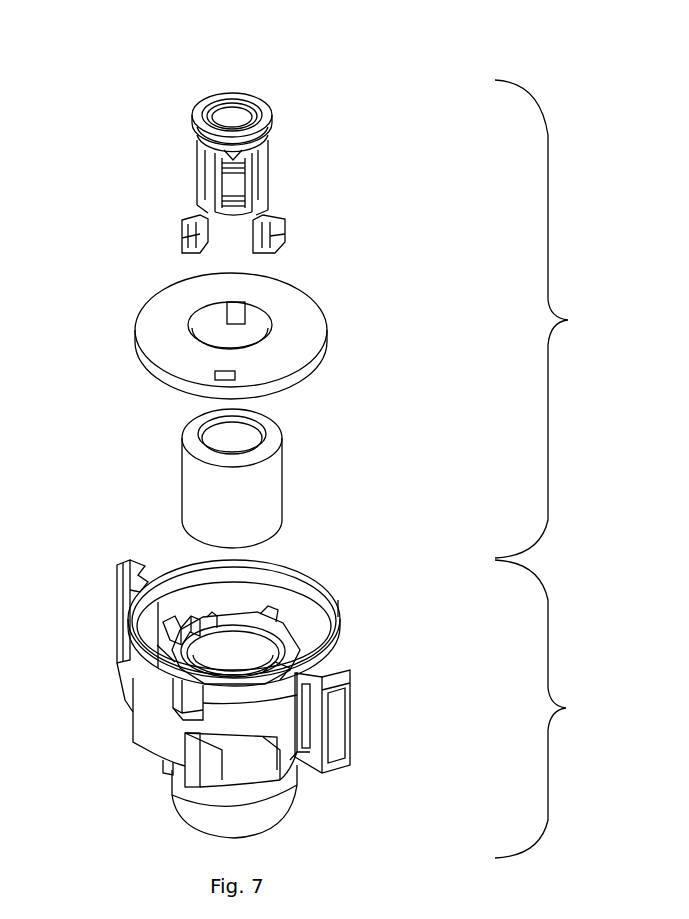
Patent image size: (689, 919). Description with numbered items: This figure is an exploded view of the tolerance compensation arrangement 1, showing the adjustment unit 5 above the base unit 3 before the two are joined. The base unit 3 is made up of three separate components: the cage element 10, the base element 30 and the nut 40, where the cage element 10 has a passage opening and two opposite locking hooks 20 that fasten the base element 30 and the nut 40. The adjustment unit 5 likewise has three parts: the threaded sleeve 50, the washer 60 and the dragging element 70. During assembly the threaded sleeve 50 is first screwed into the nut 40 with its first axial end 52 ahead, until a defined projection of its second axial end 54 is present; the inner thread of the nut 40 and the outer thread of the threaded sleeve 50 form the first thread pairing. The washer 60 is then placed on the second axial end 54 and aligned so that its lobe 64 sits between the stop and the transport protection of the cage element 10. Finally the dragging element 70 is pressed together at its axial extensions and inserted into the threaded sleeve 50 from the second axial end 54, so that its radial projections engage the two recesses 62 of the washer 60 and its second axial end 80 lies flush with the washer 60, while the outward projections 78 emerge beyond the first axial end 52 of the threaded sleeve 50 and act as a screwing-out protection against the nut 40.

The tolerance compensation arrangement 1 is at (536, 32).
The base unit 3 is at (542, 709).
The adjustment unit 5 is at (542, 319).
The cage element 10 is at (230, 699).
The locking hooks 20 is at (200, 628).
The base element 30 is at (277, 797).
The nut 40 is at (285, 638).
The threaded sleeve 50 is at (273, 483).
The first axial end 52 is at (272, 533).
The second axial end 54 is at (268, 433).
The washer 60 is at (222, 336).
The recesses 62 is at (232, 349).
The lobe 64 is at (197, 371).
The dragging element 70 is at (227, 169).
The projections 78 is at (158, 233).
The second axial end 80 is at (205, 113).